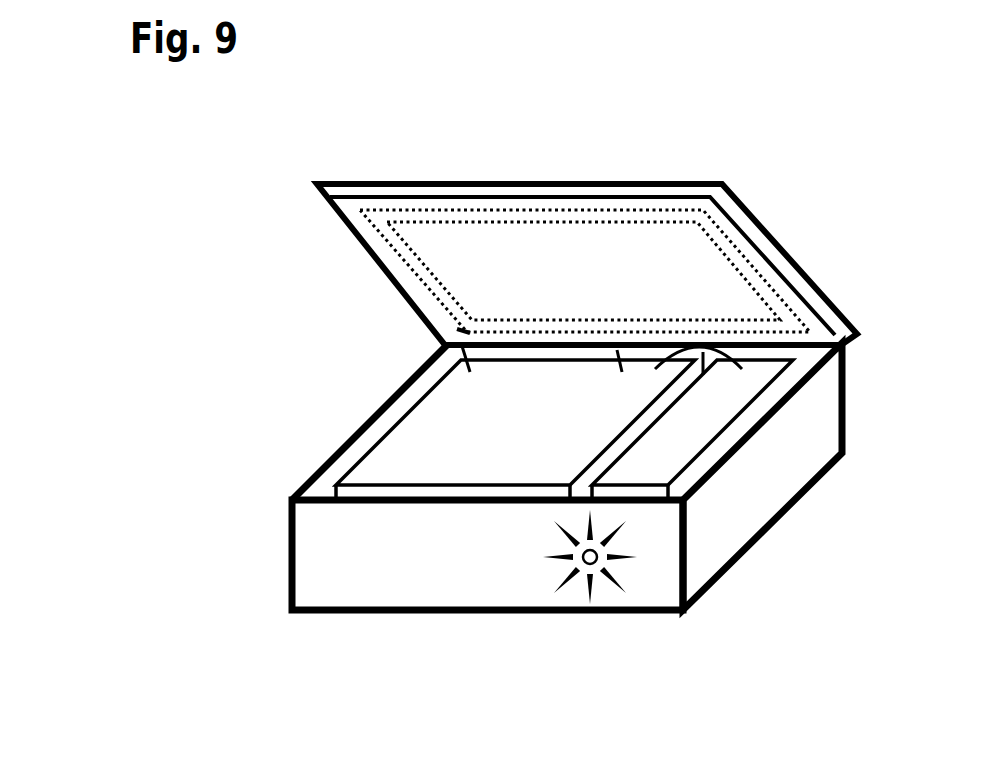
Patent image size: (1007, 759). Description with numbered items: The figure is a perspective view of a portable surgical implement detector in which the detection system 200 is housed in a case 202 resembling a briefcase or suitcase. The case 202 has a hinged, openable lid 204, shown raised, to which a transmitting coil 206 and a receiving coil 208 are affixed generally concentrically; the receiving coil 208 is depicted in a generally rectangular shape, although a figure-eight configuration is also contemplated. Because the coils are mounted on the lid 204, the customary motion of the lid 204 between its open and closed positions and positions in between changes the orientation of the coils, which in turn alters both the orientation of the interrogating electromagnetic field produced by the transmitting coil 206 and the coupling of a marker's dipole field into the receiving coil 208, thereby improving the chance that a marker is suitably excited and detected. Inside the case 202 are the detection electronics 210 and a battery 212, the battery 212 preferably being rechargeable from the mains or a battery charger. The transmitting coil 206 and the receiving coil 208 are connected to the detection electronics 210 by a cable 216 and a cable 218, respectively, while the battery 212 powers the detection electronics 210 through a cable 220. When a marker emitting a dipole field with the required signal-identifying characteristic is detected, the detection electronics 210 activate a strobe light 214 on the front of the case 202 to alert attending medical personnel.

The detection system 200 is at (168, 290).
The case 202 is at (343, 578).
The lid 204 is at (775, 255).
The transmitting coil 206 is at (373, 232).
The receiving coil 208 is at (773, 308).
The detection electronics 210 is at (522, 447).
The battery 212 is at (728, 424).
The strobe light 214 is at (585, 565).
The cable 216 is at (445, 355).
The cable 218 is at (620, 352).
The cable 220 is at (705, 356).